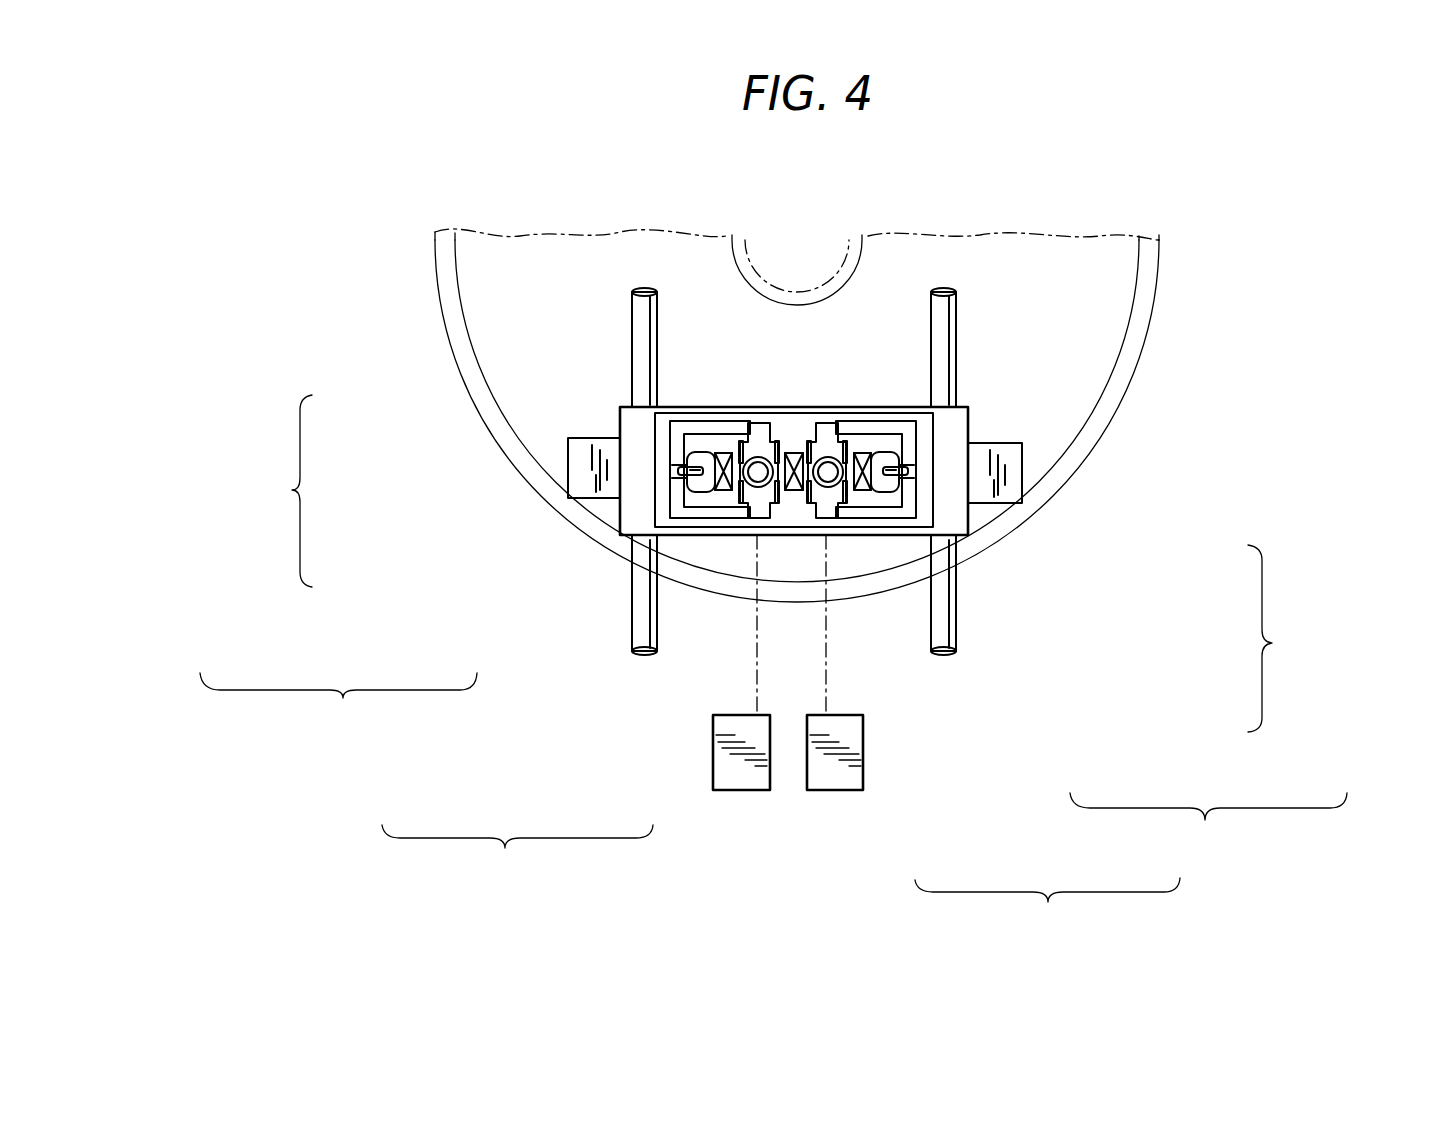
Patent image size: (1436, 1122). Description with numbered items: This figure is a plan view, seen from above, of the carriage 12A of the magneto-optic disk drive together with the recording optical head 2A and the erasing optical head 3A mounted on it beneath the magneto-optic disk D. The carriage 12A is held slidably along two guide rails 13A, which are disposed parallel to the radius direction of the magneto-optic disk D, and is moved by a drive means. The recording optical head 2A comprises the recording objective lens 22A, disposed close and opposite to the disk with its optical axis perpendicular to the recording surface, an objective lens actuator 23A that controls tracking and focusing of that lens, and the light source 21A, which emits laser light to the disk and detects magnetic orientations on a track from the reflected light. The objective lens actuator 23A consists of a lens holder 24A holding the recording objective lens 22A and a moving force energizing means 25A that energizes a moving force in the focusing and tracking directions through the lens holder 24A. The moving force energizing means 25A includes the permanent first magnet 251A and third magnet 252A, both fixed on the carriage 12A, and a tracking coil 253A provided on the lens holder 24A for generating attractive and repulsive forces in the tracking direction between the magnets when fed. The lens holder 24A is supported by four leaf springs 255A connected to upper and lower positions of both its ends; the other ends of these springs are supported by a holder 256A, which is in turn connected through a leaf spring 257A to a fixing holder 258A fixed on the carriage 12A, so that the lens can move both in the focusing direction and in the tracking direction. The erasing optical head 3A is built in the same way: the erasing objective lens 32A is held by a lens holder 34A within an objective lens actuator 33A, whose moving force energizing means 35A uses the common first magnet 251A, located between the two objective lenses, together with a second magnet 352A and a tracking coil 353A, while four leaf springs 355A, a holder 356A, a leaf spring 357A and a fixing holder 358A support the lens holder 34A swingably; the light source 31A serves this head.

The magneto-optic disk D is at (490, 236).
The guide rail 13A is at (642, 312).
The carriage 12A is at (630, 408).
The lens holder 24A is at (740, 512).
The lens holder 34A is at (848, 516).
The recording objective lens 22A is at (757, 488).
The erasing objective lens 32A is at (828, 486).
The third magnet 252A is at (716, 488).
The first magnet 251A is at (800, 452).
The second magnet 352A is at (860, 494).
The tracking coil 253A is at (380, 572).
The tracking coil 353A is at (1013, 711).
The leaf spring 255A is at (710, 428).
The leaf spring 355A is at (883, 428).
The holder 256A is at (690, 484).
The leaf spring 257A is at (684, 470).
The fixing holder 258A is at (690, 460).
The holder 356A is at (865, 492).
The leaf spring 357A is at (880, 485).
The fixing holder 358A is at (898, 478).
The light source 21A is at (713, 745).
The light source 31A is at (830, 790).
The moving force energizing means 25A is at (292, 492).
The moving force energizing means 35A is at (1274, 644).
The objective lens actuator 23A is at (340, 700).
The objective lens actuator 33A is at (1185, 812).
The recording optical head 2A is at (378, 879).
The erasing optical head 3A is at (936, 929).